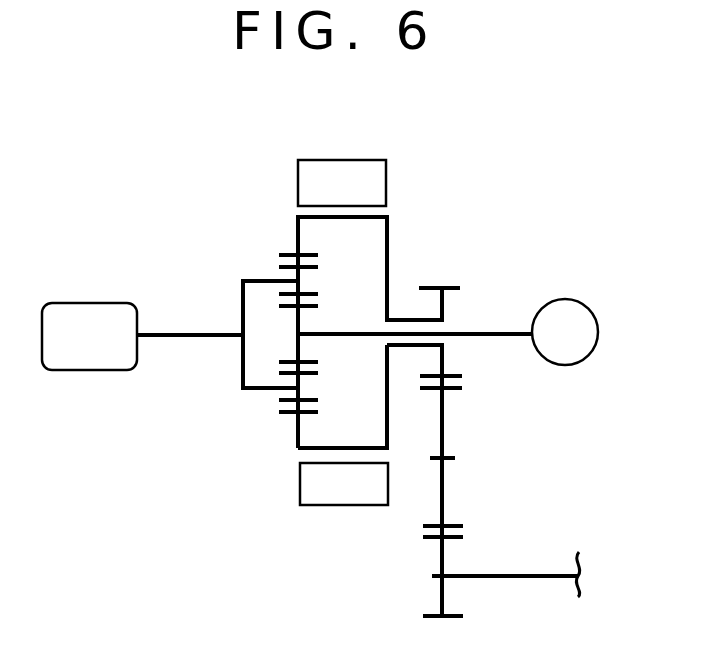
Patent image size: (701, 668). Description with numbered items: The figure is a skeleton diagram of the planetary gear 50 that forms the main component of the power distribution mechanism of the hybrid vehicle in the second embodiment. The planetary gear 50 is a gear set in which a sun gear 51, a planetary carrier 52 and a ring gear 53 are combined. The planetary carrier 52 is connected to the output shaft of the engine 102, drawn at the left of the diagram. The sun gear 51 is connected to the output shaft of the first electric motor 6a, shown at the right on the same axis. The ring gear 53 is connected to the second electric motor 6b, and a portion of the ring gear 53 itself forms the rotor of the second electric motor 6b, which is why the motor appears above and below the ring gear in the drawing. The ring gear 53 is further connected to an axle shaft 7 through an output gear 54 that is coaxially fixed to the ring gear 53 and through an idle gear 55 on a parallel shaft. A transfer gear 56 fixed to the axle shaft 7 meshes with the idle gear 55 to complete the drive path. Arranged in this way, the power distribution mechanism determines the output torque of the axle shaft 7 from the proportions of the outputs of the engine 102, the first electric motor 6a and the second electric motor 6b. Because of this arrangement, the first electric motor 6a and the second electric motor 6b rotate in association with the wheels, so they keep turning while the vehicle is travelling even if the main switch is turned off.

The engine 102 is at (92, 300).
The first electric motor 6a is at (563, 297).
The second electric motor 6b is at (343, 158).
The planetary gear 50 is at (305, 351).
The sun gear 51 is at (298, 344).
The planetary carrier 52 is at (257, 280).
The ring gear 53 is at (298, 230).
The output gear 54 is at (443, 305).
The idle gear 55 is at (443, 490).
The transfer gear 56 is at (443, 600).
The axle shaft 7 is at (537, 578).